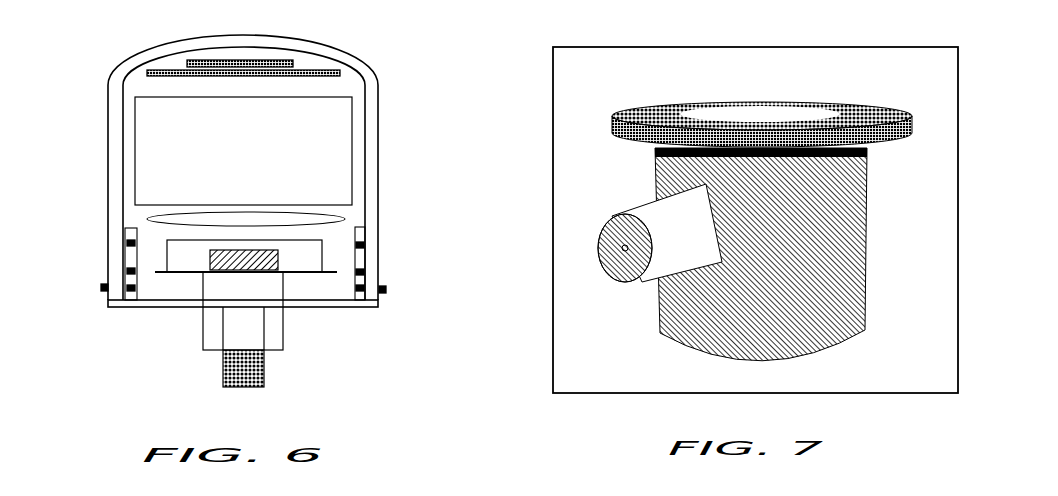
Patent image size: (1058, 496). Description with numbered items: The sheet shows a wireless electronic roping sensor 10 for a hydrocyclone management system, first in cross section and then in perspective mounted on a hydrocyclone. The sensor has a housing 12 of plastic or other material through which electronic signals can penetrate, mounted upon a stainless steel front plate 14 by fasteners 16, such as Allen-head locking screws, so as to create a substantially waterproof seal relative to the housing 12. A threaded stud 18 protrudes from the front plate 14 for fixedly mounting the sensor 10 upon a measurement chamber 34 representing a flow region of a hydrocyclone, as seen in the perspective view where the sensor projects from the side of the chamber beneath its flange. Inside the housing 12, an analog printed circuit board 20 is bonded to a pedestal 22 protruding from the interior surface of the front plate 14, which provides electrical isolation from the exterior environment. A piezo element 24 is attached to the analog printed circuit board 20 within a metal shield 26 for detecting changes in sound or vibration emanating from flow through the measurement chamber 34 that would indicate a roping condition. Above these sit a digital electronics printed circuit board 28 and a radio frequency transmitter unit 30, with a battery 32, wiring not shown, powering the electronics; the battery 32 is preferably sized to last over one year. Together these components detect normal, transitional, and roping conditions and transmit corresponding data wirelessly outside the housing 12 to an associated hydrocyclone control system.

In FIG. 6, the wireless electronic roping sensor 10 is at (104, 113).
In FIG. 7, the wireless electronic roping sensor 10 is at (596, 238).
In FIG. 6, the housing 12 is at (108, 178).
In FIG. 6, the front plate 14 is at (155, 306).
In FIG. 6, the fasteners 16 is at (103, 292).
In FIG. 6, the threaded stud 18 is at (247, 367).
In FIG. 6, the analog printed circuit board 20 is at (328, 272).
In FIG. 6, the pedestal 22 is at (278, 287).
In FIG. 6, the piezo element 24 is at (210, 255).
In FIG. 6, the shield 26 is at (323, 250).
In FIG. 6, the digital electronics printed circuit board 28 is at (340, 73).
In FIG. 6, the radio frequency transmitter unit 30 is at (293, 63).
In FIG. 6, the battery 32 is at (327, 152).
In FIG. 7, the measurement chamber 34 is at (612, 126).